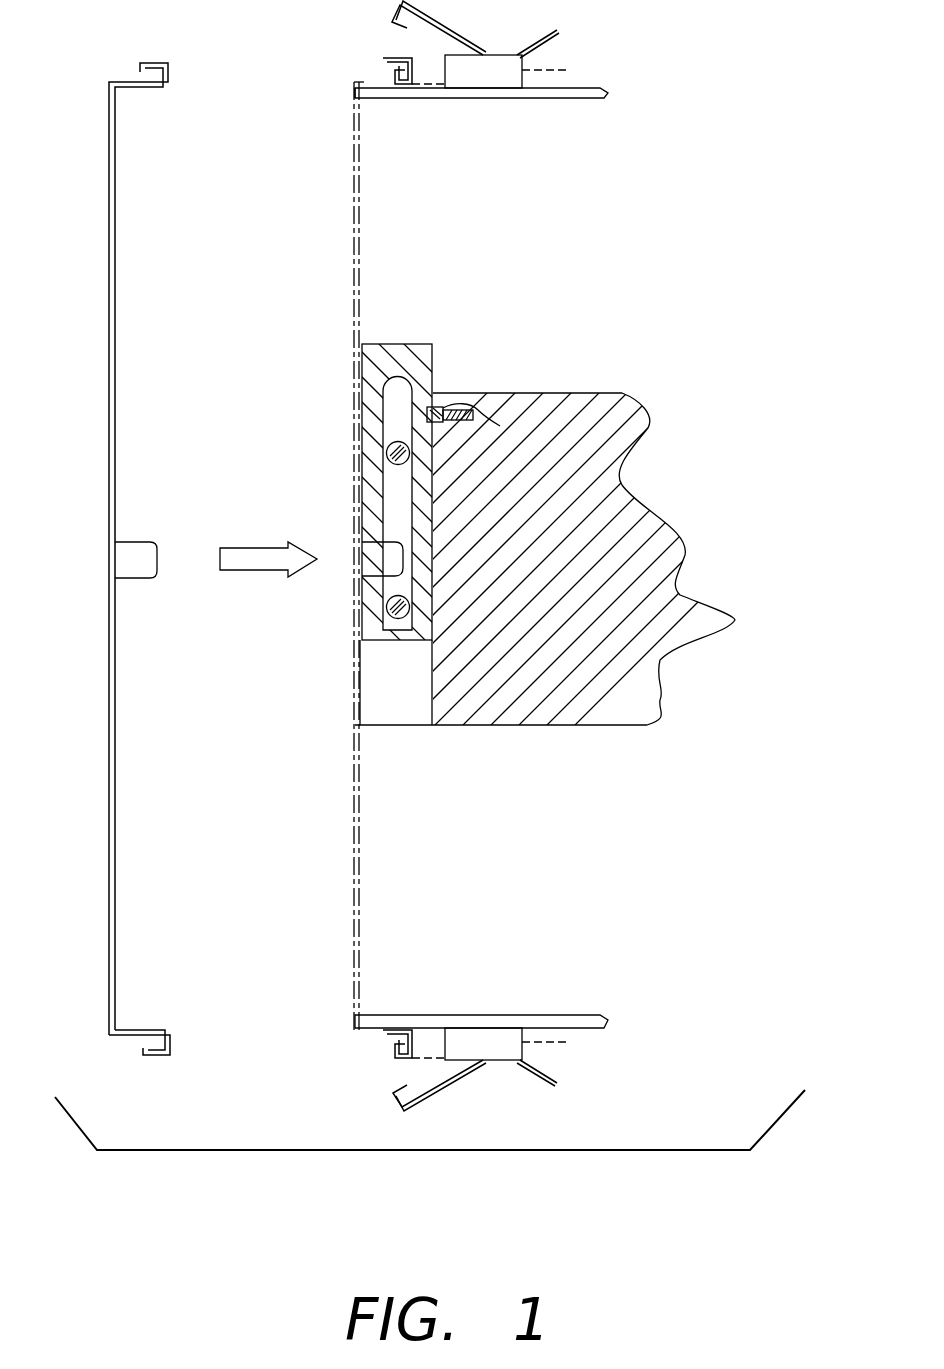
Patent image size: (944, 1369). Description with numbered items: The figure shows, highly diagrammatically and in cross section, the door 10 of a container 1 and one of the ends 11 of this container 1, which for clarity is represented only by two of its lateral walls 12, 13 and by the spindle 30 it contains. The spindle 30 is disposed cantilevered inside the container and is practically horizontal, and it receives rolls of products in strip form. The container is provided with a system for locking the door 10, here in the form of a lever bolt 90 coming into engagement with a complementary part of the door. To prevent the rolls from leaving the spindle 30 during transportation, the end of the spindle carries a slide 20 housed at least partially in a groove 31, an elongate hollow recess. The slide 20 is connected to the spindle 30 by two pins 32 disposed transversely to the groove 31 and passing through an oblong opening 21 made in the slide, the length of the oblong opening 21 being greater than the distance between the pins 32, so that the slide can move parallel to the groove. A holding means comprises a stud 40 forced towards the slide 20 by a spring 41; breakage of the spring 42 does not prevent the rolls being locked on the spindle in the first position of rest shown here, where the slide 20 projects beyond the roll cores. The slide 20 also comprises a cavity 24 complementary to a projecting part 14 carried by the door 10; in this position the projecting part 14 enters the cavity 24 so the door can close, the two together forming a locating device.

The container 1 is at (292, 972).
The door 10 is at (115, 347).
The end of the container 11 is at (297, 223).
The lateral wall 12 is at (537, 92).
The lateral wall 13 is at (445, 1022).
The projecting part 14 is at (123, 572).
The slide 20 is at (378, 638).
The oblong opening 21 is at (400, 415).
The cavity 24 is at (370, 559).
The spindle 30 is at (640, 508).
The groove 31 is at (405, 705).
The pin 32 is at (385, 453).
The stud 40 is at (436, 410).
The spring 41 is at (476, 420).
The spring 42 is at (495, 428).
The lever bolt 90 is at (480, 1073).